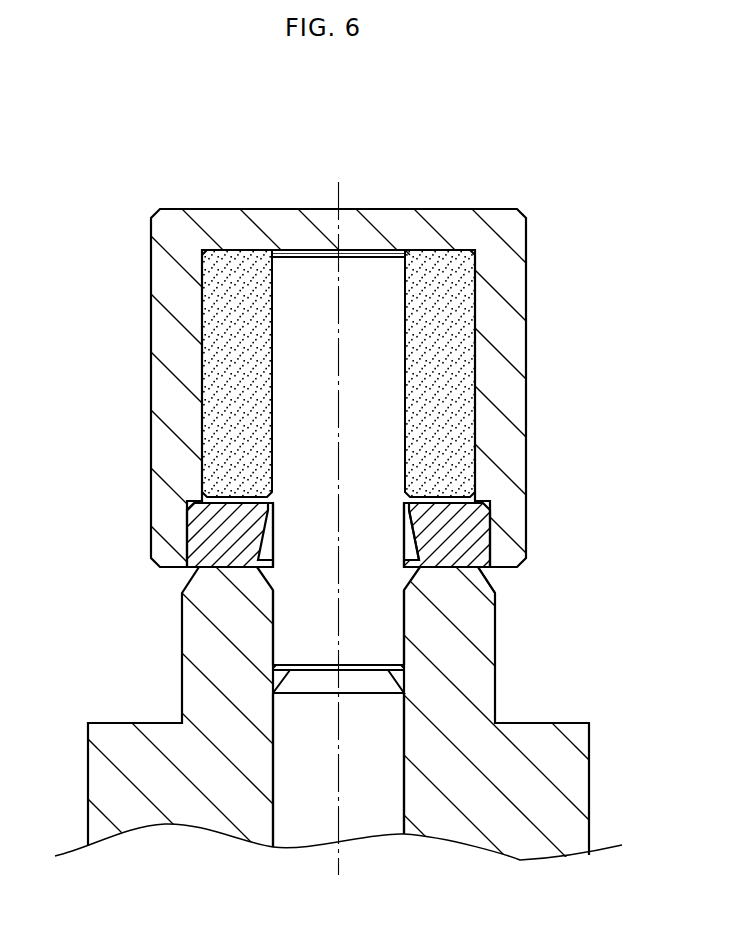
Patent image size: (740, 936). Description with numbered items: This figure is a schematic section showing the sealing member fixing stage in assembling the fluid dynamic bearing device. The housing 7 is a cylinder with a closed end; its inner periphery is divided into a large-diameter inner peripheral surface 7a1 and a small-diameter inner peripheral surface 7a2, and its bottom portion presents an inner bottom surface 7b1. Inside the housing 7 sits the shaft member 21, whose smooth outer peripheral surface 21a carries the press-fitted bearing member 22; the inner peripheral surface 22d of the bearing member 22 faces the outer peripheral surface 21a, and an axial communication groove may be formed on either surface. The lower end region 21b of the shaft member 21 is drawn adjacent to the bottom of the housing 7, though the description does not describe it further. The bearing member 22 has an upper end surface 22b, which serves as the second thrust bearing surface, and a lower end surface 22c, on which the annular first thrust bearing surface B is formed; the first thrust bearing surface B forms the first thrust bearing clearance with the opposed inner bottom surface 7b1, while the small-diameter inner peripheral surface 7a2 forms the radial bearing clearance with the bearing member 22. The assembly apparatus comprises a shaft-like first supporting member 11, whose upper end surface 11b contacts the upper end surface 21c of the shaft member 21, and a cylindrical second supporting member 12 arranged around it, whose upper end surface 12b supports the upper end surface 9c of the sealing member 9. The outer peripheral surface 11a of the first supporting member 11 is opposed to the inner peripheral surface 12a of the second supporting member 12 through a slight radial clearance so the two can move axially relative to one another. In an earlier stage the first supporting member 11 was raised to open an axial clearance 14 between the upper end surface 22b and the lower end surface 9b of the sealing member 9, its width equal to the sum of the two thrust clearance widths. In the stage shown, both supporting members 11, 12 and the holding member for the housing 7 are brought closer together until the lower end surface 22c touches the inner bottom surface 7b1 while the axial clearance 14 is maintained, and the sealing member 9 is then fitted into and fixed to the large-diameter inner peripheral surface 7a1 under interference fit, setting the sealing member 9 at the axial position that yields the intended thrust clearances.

The housing 7 is at (171, 393).
The large-diameter inner peripheral surface 7a1 is at (188, 543).
The small-diameter inner peripheral surface 7a2 is at (202, 303).
The inner bottom surface 7b1 is at (300, 257).
The bearing member 22 is at (452, 298).
The upper end surface 22b is at (436, 505).
The lower end surface 22c is at (232, 250).
The inner peripheral surface 22d is at (272, 360).
The shaft member 21 is at (378, 386).
The outer peripheral surface 21a is at (405, 412).
The upper end of bore 21b is at (368, 252).
The upper end surface 21c is at (364, 672).
The axial clearance 14 is at (237, 497).
The sealing member 9 is at (478, 544).
The lower end surface 9b is at (420, 500).
The upper end surface 9c is at (490, 580).
The second supporting member 12 is at (123, 745).
The inner peripheral surface 12a is at (274, 784).
The upper end surface 12b is at (230, 567).
The first supporting member 11 is at (371, 790).
The outer peripheral surface 11a is at (410, 786).
The upper end surface 11b is at (313, 666).
The first thrust bearing surface B is at (441, 248).